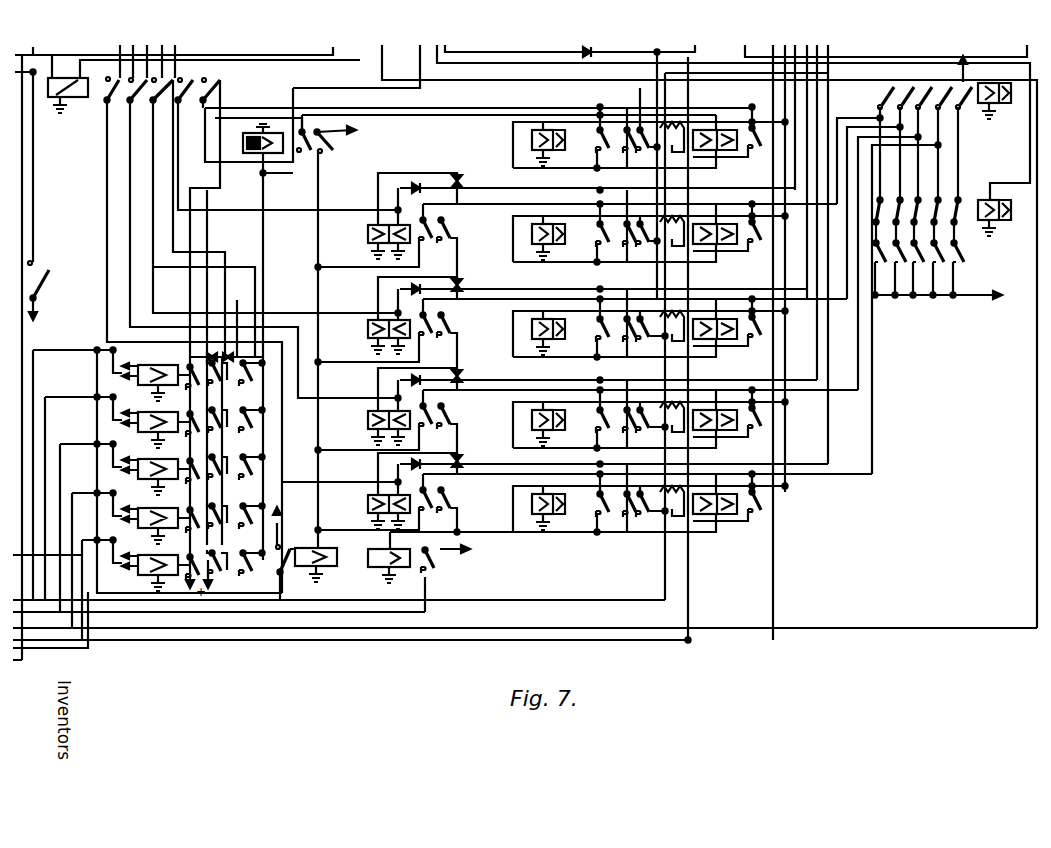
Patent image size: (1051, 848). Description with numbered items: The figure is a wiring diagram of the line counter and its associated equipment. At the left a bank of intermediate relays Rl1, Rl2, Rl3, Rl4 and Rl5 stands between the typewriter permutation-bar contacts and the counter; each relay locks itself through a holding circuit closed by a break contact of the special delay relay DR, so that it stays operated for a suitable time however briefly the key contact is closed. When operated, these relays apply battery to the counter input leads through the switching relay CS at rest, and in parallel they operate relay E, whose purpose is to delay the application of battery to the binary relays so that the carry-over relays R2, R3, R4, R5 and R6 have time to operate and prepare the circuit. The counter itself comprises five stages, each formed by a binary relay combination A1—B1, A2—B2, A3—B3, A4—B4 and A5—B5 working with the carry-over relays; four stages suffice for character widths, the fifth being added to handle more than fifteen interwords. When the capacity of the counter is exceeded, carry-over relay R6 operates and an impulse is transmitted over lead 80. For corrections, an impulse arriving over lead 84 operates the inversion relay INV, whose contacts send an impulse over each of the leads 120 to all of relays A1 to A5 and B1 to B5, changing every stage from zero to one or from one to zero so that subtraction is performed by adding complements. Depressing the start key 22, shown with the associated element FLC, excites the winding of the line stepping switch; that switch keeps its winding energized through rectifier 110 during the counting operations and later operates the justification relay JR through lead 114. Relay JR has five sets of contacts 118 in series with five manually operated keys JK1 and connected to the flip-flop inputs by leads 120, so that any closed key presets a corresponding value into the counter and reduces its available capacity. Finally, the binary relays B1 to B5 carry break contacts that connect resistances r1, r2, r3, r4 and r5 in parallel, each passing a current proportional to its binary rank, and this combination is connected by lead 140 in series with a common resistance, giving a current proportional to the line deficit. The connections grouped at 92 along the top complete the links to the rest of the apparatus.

The control relay section 92 is at (302, 57).
The lead 114 is at (665, 336).
The rectifier 110 is at (582, 52).
The lead 140 is at (878, 58).
The contacts 118 is at (882, 93).
The leads 120 is at (878, 150).
The start key 22 is at (50, 201).
The lead 84 is at (340, 630).
The lead 80 is at (398, 614).
The switching relay CS is at (68, 86).
The relay E is at (247, 131).
The float level contact FLC is at (45, 271).
The delay relay DR is at (305, 549).
The inversion relay INV is at (979, 87).
The justification relay JR is at (994, 207).
The manually operated keys JK1 is at (958, 255).
The binary relay A1 is at (532, 140).
The binary relay A2 is at (532, 234).
The binary relay A3 is at (532, 329).
The binary relay A4 is at (532, 420).
The binary relay A5 is at (532, 504).
The binary relay B1 is at (735, 128).
The binary relay B2 is at (735, 222).
The binary relay B3 is at (735, 317).
The binary relay B4 is at (735, 408).
The binary relay B5 is at (735, 492).
The resistance r1 is at (668, 128).
The resistance r2 is at (668, 222).
The resistance r3 is at (668, 317).
The resistance r4 is at (668, 408).
The resistance r5 is at (668, 492).
The carry-over relay R2 is at (555, 225).
The carry-over relay R3 is at (561, 322).
The carry-over relay R4 is at (566, 410).
The carry-over relay R5 is at (571, 493).
The carry-over relay R6 is at (418, 572).
The intermediate relay Rl1 is at (179, 374).
The intermediate relay Rl2 is at (179, 421).
The intermediate relay Rl3 is at (179, 468).
The intermediate relay Rl4 is at (179, 517).
The universal relay Rl5 is at (179, 564).